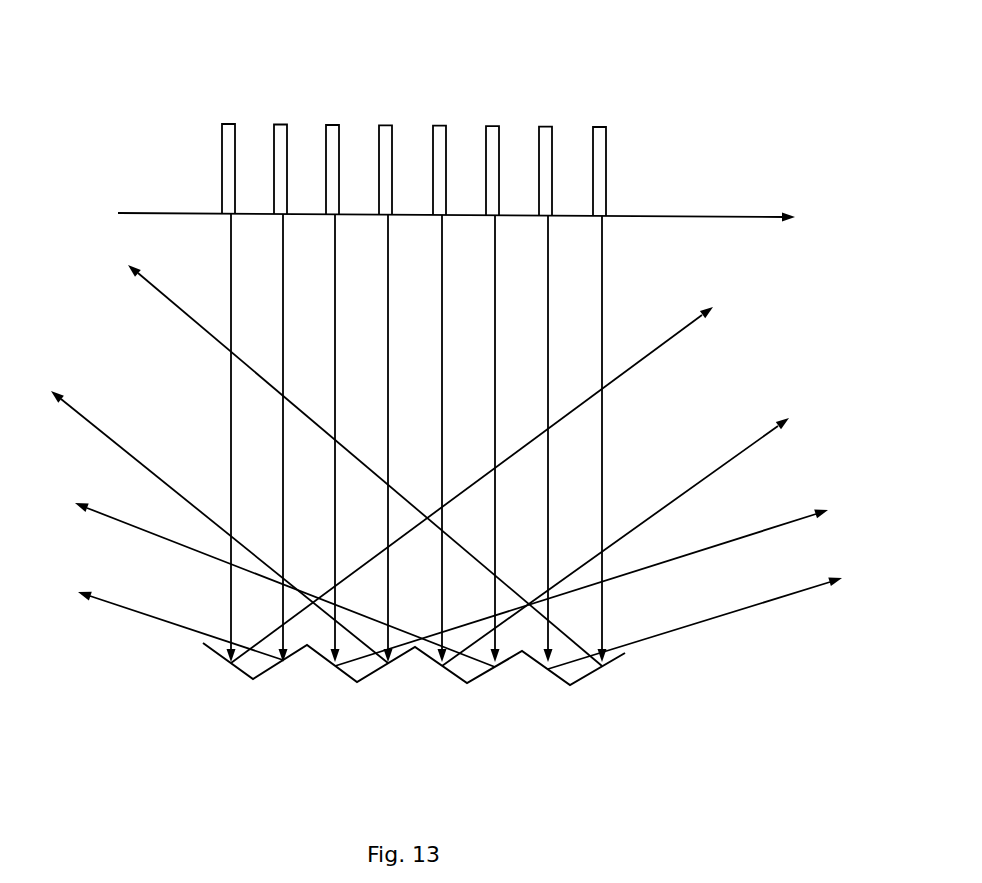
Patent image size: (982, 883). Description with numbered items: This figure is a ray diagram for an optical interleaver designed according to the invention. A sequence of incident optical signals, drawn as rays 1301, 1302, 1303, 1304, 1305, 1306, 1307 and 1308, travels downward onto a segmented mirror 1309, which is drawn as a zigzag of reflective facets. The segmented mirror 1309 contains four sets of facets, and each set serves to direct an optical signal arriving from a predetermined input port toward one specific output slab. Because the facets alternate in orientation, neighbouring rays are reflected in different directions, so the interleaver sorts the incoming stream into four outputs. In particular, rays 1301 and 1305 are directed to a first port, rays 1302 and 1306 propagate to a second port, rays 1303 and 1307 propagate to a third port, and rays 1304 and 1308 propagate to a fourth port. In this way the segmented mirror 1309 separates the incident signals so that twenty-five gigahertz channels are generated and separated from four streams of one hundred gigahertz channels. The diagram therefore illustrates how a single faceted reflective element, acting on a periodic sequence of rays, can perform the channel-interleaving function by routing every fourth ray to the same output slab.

The ray 1301 is at (486, 374).
The ray 1302 is at (175, 347).
The ray 1303 is at (584, 375).
The ray 1304 is at (223, 348).
The ray 1305 is at (622, 375).
The ray 1306 is at (283, 351).
The ray 1307 is at (699, 376).
The ray 1308 is at (345, 350).
The segmented mirror 1309 is at (480, 676).